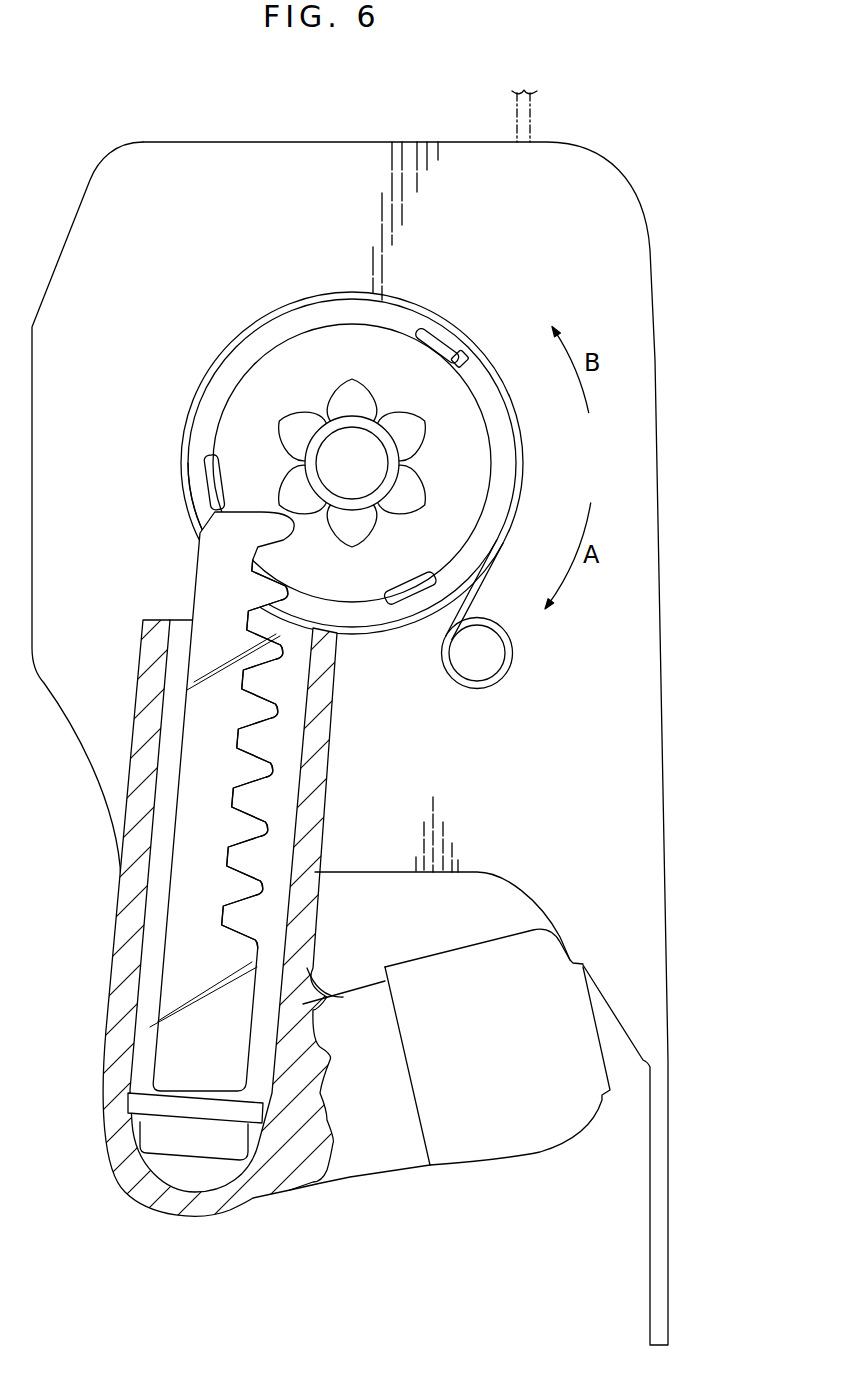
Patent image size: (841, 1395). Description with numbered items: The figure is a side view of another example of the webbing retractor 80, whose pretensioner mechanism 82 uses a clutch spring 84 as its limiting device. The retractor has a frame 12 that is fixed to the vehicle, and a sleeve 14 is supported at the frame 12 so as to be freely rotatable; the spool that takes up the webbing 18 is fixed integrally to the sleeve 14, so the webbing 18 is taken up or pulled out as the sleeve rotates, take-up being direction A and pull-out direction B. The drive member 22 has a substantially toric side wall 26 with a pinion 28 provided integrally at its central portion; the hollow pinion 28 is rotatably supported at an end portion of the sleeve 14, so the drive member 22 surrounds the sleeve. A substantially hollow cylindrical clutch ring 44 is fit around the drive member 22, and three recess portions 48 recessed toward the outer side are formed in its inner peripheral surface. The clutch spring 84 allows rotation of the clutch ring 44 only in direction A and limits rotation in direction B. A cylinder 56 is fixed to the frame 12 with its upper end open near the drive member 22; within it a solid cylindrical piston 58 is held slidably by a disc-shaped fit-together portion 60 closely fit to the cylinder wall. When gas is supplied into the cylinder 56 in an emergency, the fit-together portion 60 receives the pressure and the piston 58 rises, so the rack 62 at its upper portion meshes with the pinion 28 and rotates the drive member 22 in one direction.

The frame 12 is at (432, 142).
The sleeve 14 is at (360, 466).
The webbing 18 is at (532, 105).
The drive member 22 is at (339, 322).
The side wall 26 is at (375, 343).
The pinion 28 is at (356, 403).
The clutch ring 44 is at (257, 337).
The recess portions 48 is at (462, 347).
The cylinder 56 is at (325, 777).
The piston 58 is at (250, 801).
The fit-together portion 60 is at (143, 1107).
The rack 62 is at (272, 708).
The webbing retractor 80 is at (136, 126).
The pretensioner mechanism 82 is at (405, 760).
The clutch spring 84 is at (518, 462).